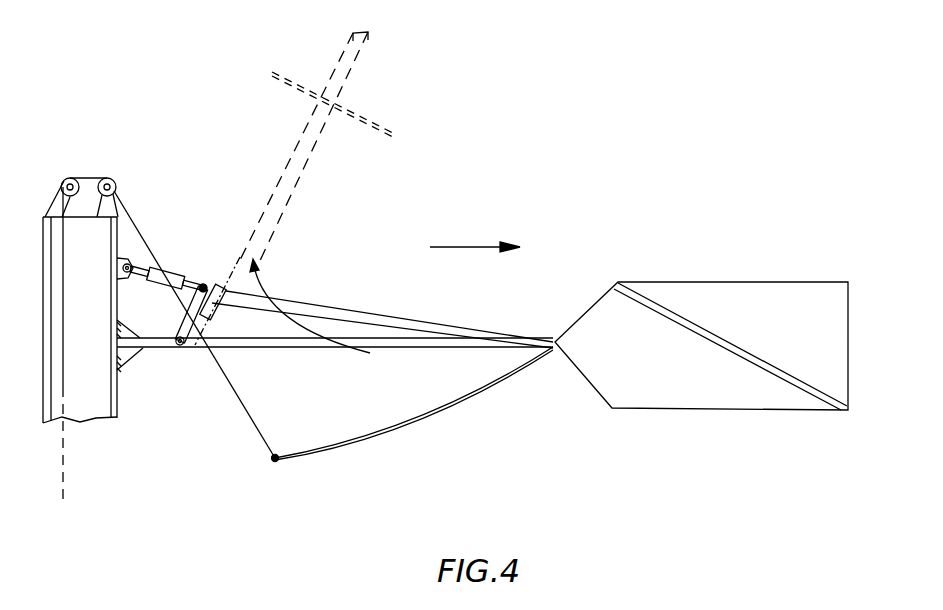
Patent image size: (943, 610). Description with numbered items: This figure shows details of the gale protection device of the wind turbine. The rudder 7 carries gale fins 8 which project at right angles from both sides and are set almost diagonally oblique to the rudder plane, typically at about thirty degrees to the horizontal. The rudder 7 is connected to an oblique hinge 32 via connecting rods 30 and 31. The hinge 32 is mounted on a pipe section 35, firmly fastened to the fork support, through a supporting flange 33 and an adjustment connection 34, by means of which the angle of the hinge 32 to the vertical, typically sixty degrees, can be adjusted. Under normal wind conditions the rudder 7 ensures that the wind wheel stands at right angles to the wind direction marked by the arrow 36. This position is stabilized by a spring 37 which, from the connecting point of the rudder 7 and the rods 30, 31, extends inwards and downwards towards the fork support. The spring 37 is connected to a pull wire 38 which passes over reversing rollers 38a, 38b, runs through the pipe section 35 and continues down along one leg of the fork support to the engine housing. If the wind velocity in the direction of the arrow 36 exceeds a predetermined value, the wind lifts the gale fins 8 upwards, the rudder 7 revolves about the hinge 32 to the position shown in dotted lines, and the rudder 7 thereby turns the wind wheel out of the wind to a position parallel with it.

The rudder 7 is at (728, 288).
The gale fins 8 is at (725, 338).
The connecting rod 30 is at (383, 347).
The connecting rod 31 is at (423, 320).
The oblique hinge 32 is at (187, 323).
The supporting flange 33 is at (150, 349).
The adjustment connection 34 is at (180, 258).
The pipe section 35 is at (118, 398).
The arrow 36 is at (450, 247).
The spring 37 is at (421, 418).
The pull wire 38 is at (63, 373).
The pulley 38a is at (110, 177).
The pulley 38b is at (70, 177).